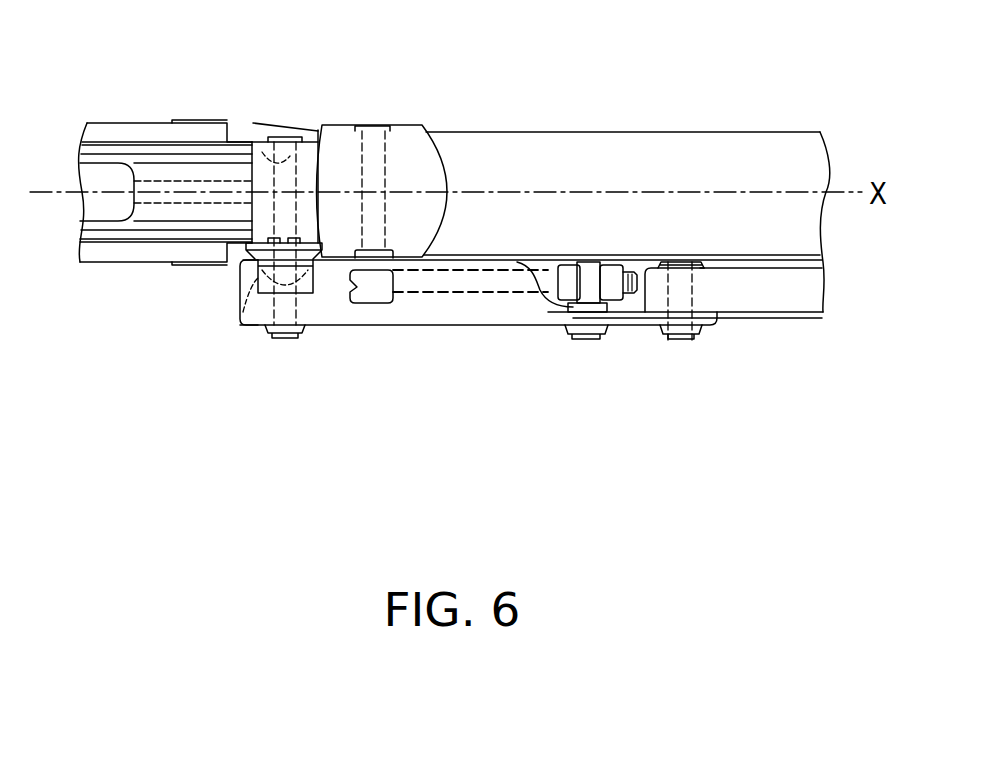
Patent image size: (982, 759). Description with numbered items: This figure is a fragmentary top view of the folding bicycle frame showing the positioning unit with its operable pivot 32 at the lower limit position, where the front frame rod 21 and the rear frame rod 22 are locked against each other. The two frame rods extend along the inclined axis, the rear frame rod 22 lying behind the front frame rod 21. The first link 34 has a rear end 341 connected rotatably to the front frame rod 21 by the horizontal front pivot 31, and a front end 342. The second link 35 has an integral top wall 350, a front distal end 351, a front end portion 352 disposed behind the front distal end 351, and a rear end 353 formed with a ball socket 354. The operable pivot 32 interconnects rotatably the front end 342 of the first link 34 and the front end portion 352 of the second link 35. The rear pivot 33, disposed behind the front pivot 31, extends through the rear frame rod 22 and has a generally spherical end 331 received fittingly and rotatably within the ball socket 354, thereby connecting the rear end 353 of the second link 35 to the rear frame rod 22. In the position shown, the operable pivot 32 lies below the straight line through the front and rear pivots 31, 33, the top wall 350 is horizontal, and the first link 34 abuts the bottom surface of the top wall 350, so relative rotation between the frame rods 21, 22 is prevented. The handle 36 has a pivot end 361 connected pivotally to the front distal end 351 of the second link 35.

The front frame rod 21 is at (716, 132).
The rear frame rod 22 is at (134, 123).
The front pivot 31 is at (400, 138).
The operable pivot 32 is at (584, 280).
The rear pivot 33 is at (260, 140).
The first link 34 is at (512, 285).
The second link 35 is at (441, 290).
The handle 36 is at (793, 312).
The spherical end 331 is at (258, 322).
The rear end 341 is at (344, 300).
The front end 342 is at (623, 277).
The top wall 350 is at (497, 300).
The front distal end 351 is at (708, 314).
The front end portion 352 is at (632, 312).
The rear end 353 is at (240, 268).
The ball socket 354 is at (312, 290).
The pivot end 361 is at (652, 268).